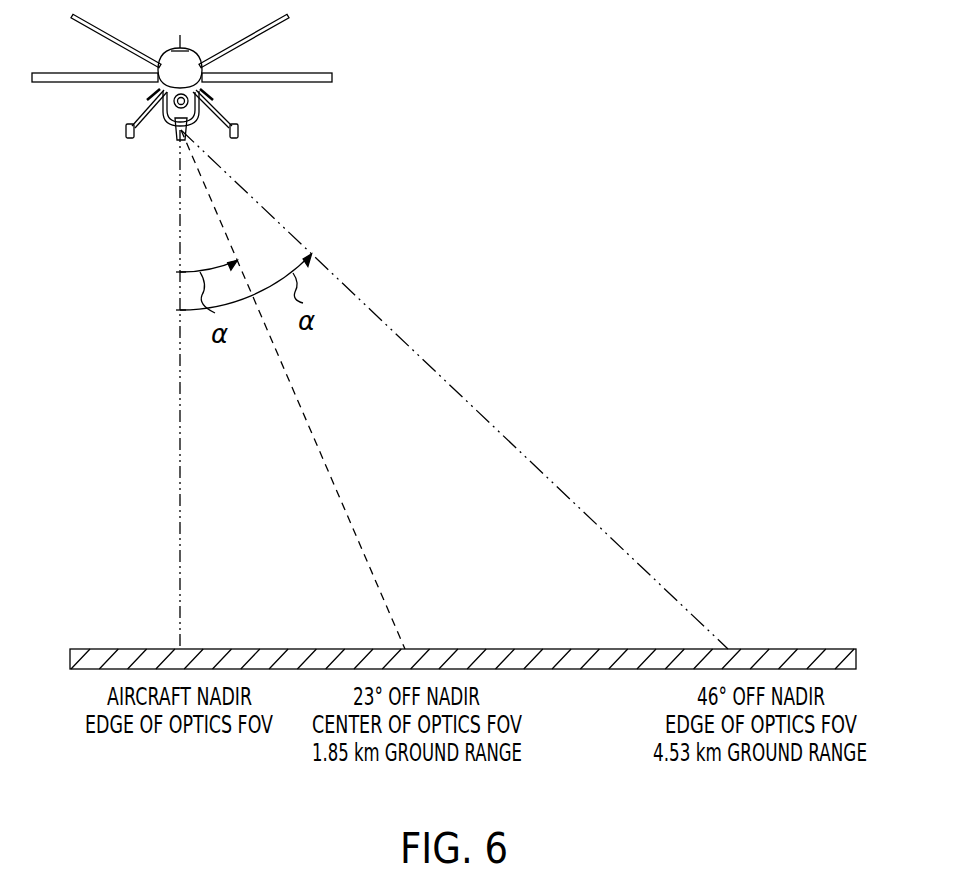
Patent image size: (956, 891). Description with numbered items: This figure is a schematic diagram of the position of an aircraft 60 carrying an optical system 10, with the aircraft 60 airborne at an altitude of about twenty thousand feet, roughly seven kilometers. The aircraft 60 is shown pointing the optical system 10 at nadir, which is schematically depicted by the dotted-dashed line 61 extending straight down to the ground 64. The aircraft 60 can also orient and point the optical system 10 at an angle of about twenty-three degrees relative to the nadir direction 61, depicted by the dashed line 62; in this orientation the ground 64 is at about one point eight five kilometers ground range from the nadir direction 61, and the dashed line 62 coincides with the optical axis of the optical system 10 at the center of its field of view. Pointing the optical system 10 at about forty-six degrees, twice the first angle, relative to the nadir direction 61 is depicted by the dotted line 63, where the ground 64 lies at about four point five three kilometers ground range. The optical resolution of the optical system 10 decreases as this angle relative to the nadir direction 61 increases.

The aircraft 60 is at (312, 32).
The optical system 10 is at (197, 117).
The nadir direction 61 is at (178, 427).
The dashed line 62 is at (313, 440).
The dotted line 63 is at (488, 428).
The ground 64 is at (805, 649).